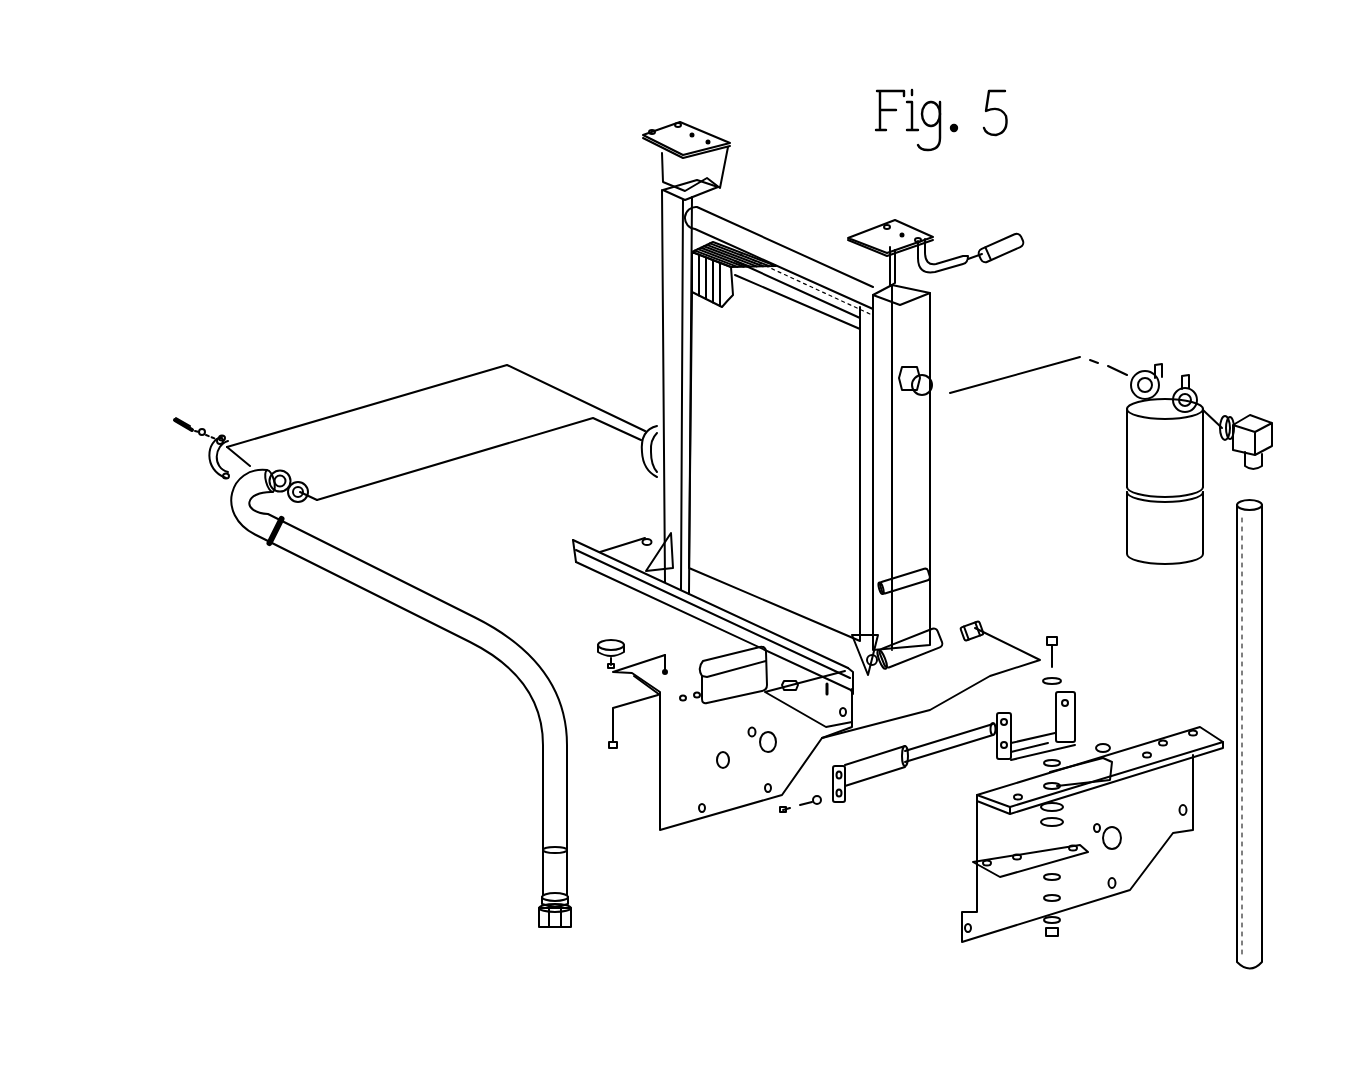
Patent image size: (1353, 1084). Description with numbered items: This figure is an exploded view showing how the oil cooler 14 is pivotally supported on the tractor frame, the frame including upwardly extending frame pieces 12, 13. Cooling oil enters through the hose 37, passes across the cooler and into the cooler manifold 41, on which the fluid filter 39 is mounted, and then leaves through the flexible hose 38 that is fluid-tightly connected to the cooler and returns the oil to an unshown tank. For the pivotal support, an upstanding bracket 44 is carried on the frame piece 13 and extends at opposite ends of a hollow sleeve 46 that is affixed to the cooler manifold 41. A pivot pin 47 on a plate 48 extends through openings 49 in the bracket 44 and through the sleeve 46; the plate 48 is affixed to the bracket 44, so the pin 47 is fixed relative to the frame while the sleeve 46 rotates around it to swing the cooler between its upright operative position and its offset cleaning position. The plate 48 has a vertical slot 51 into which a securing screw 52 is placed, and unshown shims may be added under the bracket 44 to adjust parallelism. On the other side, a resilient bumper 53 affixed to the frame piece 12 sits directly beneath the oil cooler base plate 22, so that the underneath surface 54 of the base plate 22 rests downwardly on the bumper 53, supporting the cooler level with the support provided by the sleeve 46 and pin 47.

The frame piece 12 is at (670, 803).
The frame piece 13 is at (973, 913).
The oil cooler 14 is at (808, 455).
The oil cooler base plate 22 is at (630, 548).
The hose 37 is at (427, 613).
The flexible hose 38 is at (1243, 572).
The fluid filter 39 is at (1140, 463).
The cooler manifold 41 is at (910, 517).
The bracket 44 is at (1078, 717).
The hollow sleeve 46 is at (908, 647).
The pivot pin 47 is at (870, 763).
The plate 48 is at (843, 800).
The openings 49 is at (997, 725).
The vertical slot 51 is at (845, 797).
The securing screw 52 is at (1104, 744).
The resilient bumper 53 is at (610, 636).
The underneath surface 54 is at (627, 568).